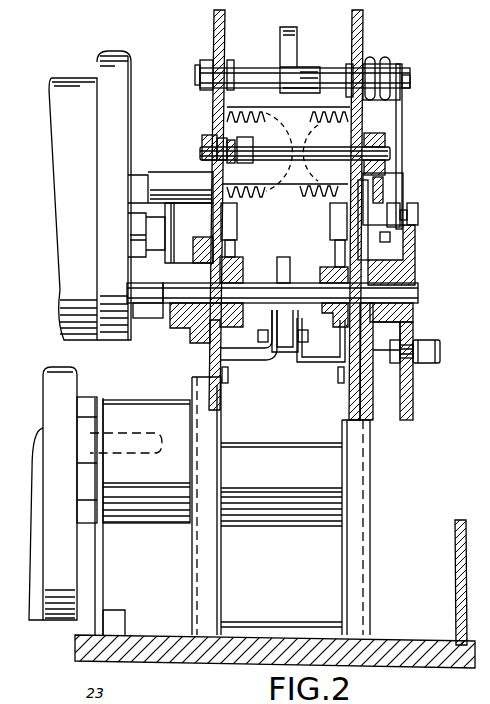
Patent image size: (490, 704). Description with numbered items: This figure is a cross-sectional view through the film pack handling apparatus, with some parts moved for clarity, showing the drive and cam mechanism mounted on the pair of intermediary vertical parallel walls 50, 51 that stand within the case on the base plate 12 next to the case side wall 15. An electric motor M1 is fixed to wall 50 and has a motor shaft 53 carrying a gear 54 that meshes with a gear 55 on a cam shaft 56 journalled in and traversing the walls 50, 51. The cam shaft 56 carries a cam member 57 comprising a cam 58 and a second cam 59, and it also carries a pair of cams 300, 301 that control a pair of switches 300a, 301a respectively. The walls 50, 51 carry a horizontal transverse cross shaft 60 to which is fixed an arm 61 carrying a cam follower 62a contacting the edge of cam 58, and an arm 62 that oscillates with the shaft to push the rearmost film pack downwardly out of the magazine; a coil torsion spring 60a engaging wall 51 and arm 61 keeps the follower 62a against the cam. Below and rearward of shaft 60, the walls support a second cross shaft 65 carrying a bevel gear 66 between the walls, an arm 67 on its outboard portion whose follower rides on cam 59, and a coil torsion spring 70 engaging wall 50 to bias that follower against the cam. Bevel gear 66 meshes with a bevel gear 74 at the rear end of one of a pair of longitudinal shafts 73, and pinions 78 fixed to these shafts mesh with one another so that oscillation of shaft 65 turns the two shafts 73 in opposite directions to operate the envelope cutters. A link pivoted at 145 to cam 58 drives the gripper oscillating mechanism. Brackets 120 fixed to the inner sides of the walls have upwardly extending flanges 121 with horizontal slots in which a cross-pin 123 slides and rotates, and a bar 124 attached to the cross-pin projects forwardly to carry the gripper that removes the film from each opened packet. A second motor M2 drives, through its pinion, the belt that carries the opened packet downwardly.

The electric motor M1 is at (67, 80).
The second motor M2 is at (55, 624).
The base plate 12 is at (185, 657).
The side wall 15 is at (463, 594).
The intermediate vertical side wall 50 is at (228, 23).
The intermediate vertical side wall 51 is at (376, 12).
The motor shaft 53 is at (145, 292).
The gear 54 is at (200, 215).
The gear 55 is at (203, 340).
The cam shaft 56 is at (420, 292).
The cam member 57 is at (440, 245).
The cam 58 is at (413, 406).
The second cam 59 is at (380, 361).
The cross shaft 60 is at (260, 57).
The coil torsion spring 60a is at (387, 60).
The arm 61 is at (400, 180).
The arm 62 is at (297, 42).
The cam follower 62a is at (415, 210).
The cross shaft 65 is at (393, 155).
The bevel gear 66 is at (296, 223).
The arm 67 is at (387, 220).
The coil torsion spring 70 is at (221, 130).
The longitudinal shaft 73 is at (319, 181).
The bevel gear 74 is at (325, 136).
The pinion 78 is at (310, 120).
The bracket 120 is at (245, 360).
The flange 121 is at (263, 341).
The cross-pin 123 is at (307, 310).
The bar 124 is at (268, 263).
The pivot 145 is at (418, 337).
The cam 300 is at (244, 273).
The switch 300a is at (236, 213).
The cam 301 is at (326, 321).
The switch 301a is at (337, 211).